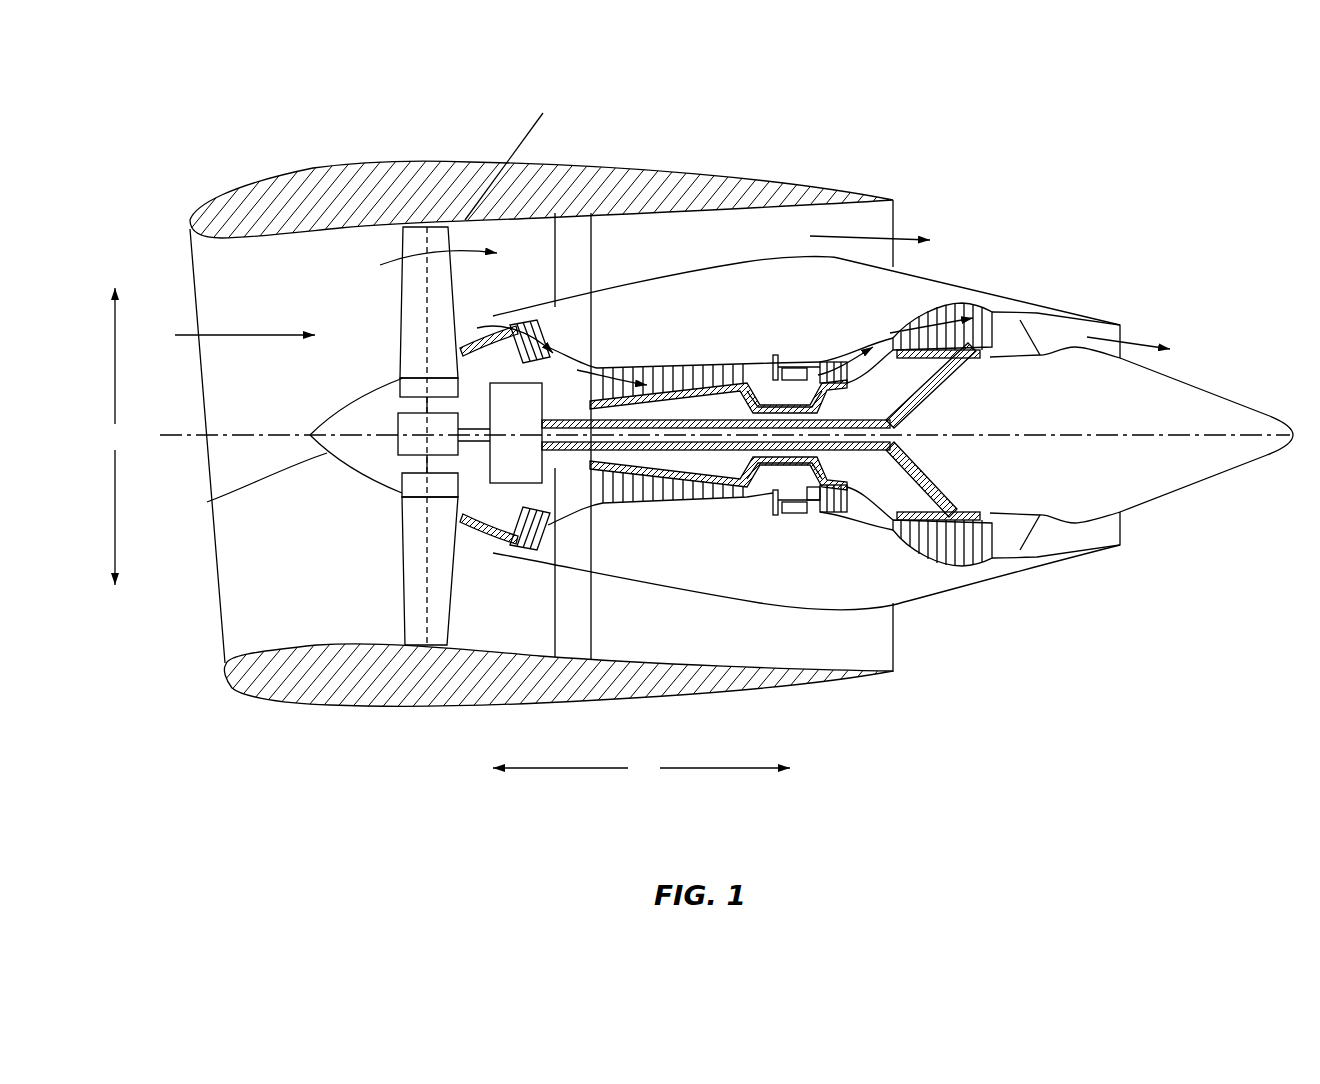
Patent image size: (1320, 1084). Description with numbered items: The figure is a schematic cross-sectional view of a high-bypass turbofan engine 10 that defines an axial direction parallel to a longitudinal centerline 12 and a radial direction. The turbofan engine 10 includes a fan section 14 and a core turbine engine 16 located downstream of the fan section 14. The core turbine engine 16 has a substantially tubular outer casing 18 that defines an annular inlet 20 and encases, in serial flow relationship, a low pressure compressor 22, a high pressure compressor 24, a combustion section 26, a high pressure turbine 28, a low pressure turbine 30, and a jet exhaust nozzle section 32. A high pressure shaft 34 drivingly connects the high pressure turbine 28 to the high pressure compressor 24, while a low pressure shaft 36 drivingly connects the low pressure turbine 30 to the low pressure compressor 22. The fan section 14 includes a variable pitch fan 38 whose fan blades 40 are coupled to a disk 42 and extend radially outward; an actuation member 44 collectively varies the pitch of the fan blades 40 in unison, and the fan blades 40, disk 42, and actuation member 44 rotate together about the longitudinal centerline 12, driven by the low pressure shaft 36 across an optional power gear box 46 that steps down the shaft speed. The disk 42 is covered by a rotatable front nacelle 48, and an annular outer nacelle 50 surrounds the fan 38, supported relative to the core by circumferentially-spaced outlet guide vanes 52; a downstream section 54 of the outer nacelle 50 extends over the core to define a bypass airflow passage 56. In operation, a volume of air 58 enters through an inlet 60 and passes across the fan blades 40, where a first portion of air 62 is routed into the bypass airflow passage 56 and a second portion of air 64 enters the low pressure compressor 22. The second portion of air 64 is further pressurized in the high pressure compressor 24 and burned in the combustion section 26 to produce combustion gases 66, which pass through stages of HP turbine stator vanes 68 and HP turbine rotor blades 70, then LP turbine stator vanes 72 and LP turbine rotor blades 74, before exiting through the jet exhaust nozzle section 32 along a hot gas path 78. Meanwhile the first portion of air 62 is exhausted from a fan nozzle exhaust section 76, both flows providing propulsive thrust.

The turbofan engine 10 is at (1036, 177).
The longitudinal centerline 12 is at (1058, 433).
The fan section 14 is at (357, 250).
The core turbine engine 16 is at (765, 244).
The outer casing 18 is at (750, 603).
The annular inlet 20 is at (503, 540).
The low pressure compressor 22 is at (542, 522).
The high pressure compressor 24 is at (622, 490).
The combustion section 26 is at (792, 497).
The high pressure turbine 28 is at (858, 507).
The low pressure turbine 30 is at (975, 562).
The jet exhaust nozzle section 32 is at (1037, 542).
The high pressure shaft 34 is at (797, 408).
The low pressure shaft 36 is at (905, 412).
The variable pitch fan 38 is at (368, 488).
The fan blades 40 is at (402, 583).
The disk 42 is at (403, 388).
The actuation member 44 is at (398, 418).
The power gear box 46 is at (528, 400).
The front nacelle 48 is at (207, 502).
The outer nacelle 50 is at (448, 708).
The outlet guide vanes 52 is at (590, 240).
The downstream section 54 is at (834, 182).
The bypass airflow passage 56 is at (688, 261).
The volume of air 58 is at (241, 333).
The inlet 60 is at (217, 650).
The first portion of air 62 is at (420, 258).
The second portion of air 64 is at (495, 318).
The combustion gases 66 is at (936, 302).
The HP turbine stator vanes 68 is at (808, 500).
The HP turbine rotor blades 70 is at (850, 492).
The LP turbine stator vanes 72 is at (910, 547).
The LP turbine rotor blades 74 is at (912, 554).
The fan nozzle exhaust section 76 is at (886, 223).
The hot gas path 78 is at (880, 343).